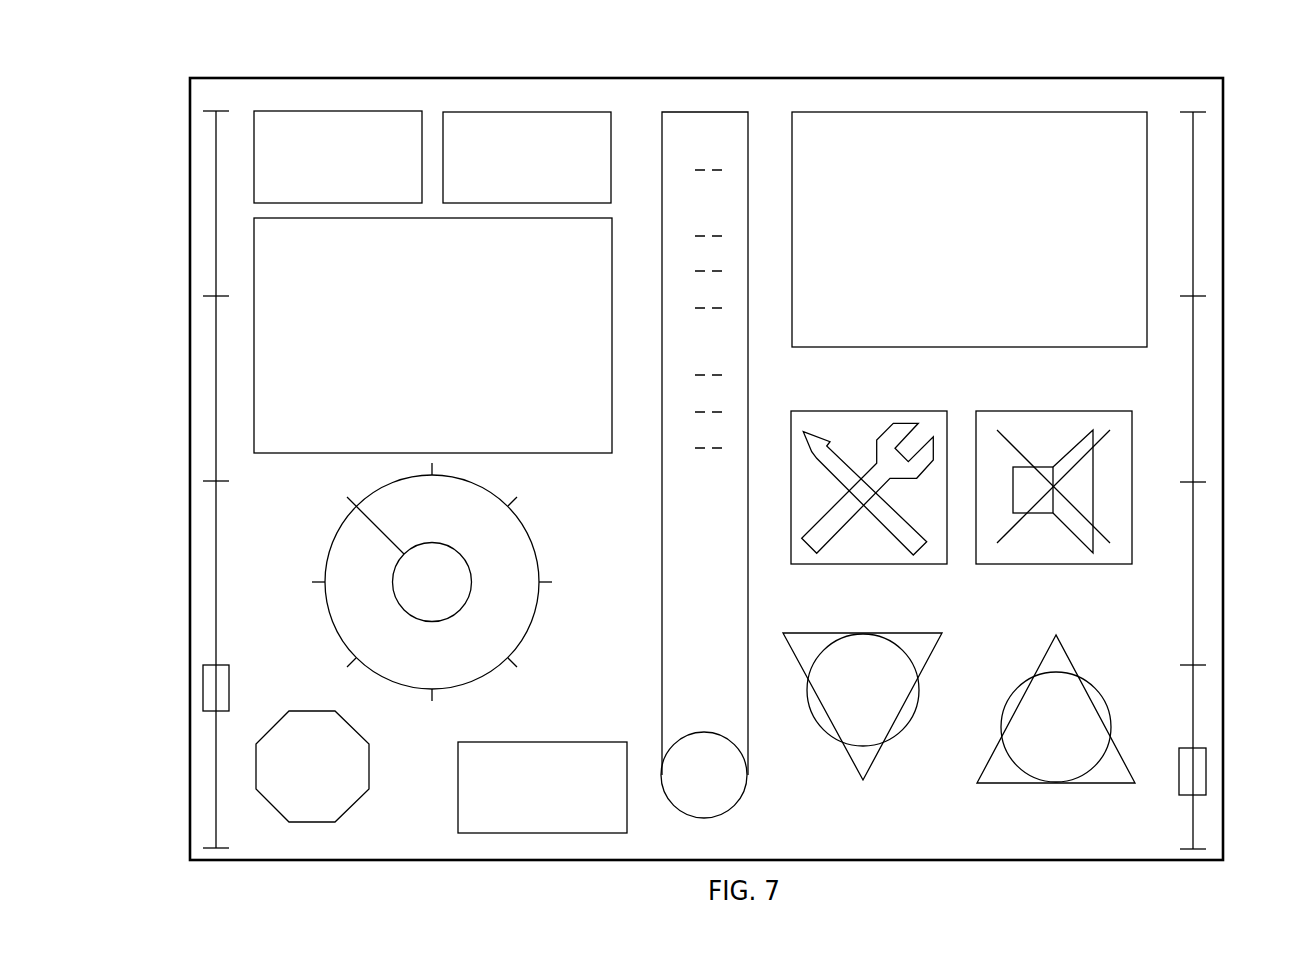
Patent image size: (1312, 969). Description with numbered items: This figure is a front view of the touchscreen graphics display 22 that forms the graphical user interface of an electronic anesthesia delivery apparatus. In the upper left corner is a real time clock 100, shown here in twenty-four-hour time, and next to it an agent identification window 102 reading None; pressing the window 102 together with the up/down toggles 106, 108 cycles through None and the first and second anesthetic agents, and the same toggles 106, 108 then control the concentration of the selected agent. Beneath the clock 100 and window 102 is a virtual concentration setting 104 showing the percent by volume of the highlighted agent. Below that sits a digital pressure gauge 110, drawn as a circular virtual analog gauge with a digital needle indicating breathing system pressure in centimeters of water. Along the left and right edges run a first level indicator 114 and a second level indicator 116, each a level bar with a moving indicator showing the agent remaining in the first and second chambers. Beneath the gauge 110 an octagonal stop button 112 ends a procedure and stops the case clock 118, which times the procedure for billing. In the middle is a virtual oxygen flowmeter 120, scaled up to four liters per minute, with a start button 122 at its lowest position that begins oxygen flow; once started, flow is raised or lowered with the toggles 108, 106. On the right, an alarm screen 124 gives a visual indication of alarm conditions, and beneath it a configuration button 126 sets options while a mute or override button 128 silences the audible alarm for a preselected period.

The touchscreen graphics display 22 is at (1167, 78).
The real time clock 100 is at (305, 122).
The agent identification window 102 is at (465, 118).
The virtual concentration setting 104 is at (601, 253).
The down toggle button 106 is at (904, 637).
The up toggle button 108 is at (1057, 657).
The digital pressure gauge 110 is at (340, 542).
The stop button 112 is at (339, 791).
The first level indicator 114 is at (216, 397).
The second level indicator 116 is at (1192, 412).
The case clock 118 is at (614, 818).
The oxygen flowmeter 120 is at (748, 383).
The start button 122 is at (733, 787).
The alarm screen 124 is at (940, 117).
The configuration button 126 is at (882, 409).
The mute or override button 128 is at (1100, 409).